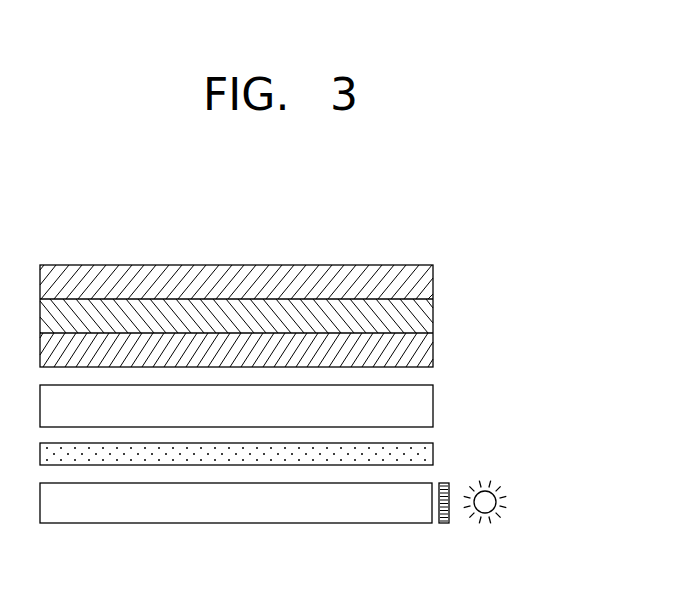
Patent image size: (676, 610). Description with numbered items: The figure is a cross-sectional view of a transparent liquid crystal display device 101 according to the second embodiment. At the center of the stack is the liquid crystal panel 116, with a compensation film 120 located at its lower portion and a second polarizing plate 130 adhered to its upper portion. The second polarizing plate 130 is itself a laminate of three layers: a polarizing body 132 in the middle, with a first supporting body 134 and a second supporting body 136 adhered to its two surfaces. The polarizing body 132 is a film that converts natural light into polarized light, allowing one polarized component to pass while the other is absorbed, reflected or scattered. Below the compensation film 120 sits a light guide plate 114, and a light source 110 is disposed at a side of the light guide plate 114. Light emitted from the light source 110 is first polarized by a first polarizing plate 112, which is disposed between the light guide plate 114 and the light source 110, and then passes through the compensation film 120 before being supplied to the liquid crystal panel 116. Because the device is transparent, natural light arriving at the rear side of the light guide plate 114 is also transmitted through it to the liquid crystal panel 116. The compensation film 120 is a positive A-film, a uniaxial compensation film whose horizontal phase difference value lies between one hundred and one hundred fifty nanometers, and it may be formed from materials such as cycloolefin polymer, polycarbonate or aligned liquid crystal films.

The transparent liquid crystal display device 101 is at (491, 219).
The second polarizing plate 130 is at (504, 266).
The second supporting body 136 is at (426, 282).
The polarizing body 132 is at (424, 316).
The first supporting body 134 is at (425, 355).
The liquid crystal panel 116 is at (423, 405).
The compensation film 120 is at (423, 456).
The light guide plate 114 is at (391, 520).
The first polarizing plate 112 is at (445, 523).
The light source 110 is at (492, 500).